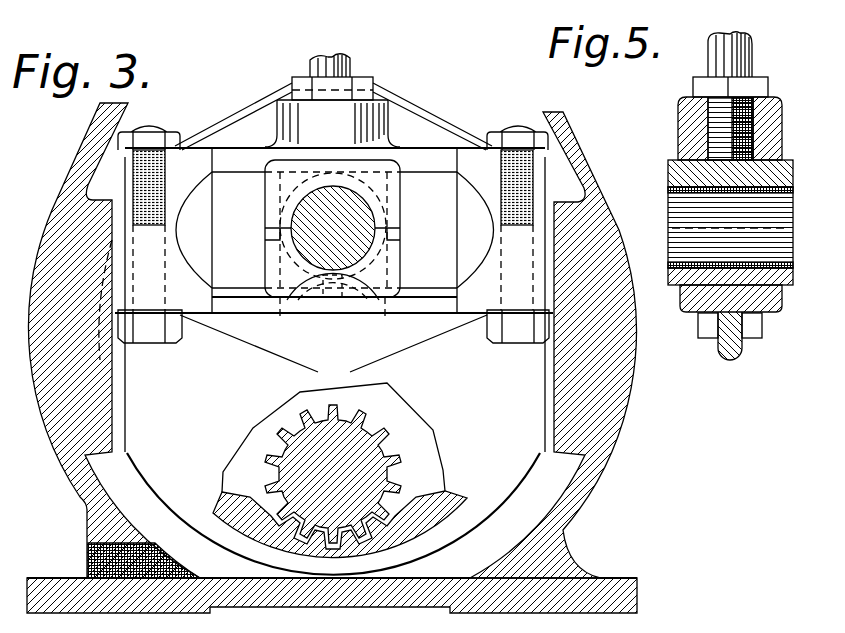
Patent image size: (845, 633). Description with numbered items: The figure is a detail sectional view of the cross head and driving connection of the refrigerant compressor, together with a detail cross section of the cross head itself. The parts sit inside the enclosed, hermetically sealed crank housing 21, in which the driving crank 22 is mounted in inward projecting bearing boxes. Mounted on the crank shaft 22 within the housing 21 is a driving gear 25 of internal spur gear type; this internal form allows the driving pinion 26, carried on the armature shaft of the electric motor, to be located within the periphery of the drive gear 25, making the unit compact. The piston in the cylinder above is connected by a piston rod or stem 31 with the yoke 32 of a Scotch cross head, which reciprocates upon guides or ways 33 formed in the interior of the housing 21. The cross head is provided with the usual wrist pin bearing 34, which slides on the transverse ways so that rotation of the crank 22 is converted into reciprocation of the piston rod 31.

In FIG. 3, the crank housing 21 is at (72, 167).
In FIG. 3, the driving crank 22 is at (372, 233).
In FIG. 3, the driving gear 25 is at (457, 473).
In FIG. 3, the driving pinion 26 is at (367, 457).
In FIG. 3, the piston rod 31 is at (357, 66).
In FIG. 5, the piston rod 31 is at (752, 45).
In FIG. 3, the yoke 32 is at (230, 300).
In FIG. 5, the yoke 32 is at (705, 295).
In FIG. 3, the guides or ways 33 is at (141, 411).
In FIG. 3, the wrist pin bearing 34 is at (400, 257).
In FIG. 5, the wrist pin bearing 34 is at (670, 180).